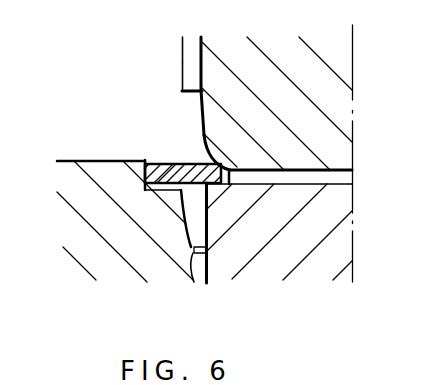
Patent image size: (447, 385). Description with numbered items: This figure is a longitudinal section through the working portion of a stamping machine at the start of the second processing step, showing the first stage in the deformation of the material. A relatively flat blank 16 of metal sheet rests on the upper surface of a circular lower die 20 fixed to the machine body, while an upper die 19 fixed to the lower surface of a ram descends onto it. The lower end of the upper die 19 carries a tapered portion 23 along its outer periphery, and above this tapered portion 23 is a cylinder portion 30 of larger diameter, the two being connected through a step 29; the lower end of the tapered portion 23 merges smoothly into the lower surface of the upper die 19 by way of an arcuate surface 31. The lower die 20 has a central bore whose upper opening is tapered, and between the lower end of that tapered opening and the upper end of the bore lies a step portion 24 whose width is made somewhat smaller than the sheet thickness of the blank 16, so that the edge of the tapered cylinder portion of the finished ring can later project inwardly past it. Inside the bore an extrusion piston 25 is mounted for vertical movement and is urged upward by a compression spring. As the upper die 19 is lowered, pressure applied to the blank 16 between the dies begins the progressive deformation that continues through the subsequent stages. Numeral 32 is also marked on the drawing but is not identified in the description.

The blank 16 is at (157, 164).
The upper die 19 is at (340, 62).
The lower die 20 is at (88, 164).
The tapered portion 23 is at (207, 145).
The step portion 24 is at (193, 270).
The extrusion piston 25 is at (337, 239).
The step 29 is at (192, 94).
The cylinder portion 30 is at (186, 65).
The arcuate surface 31 is at (227, 184).
The edge 32 is at (182, 39).